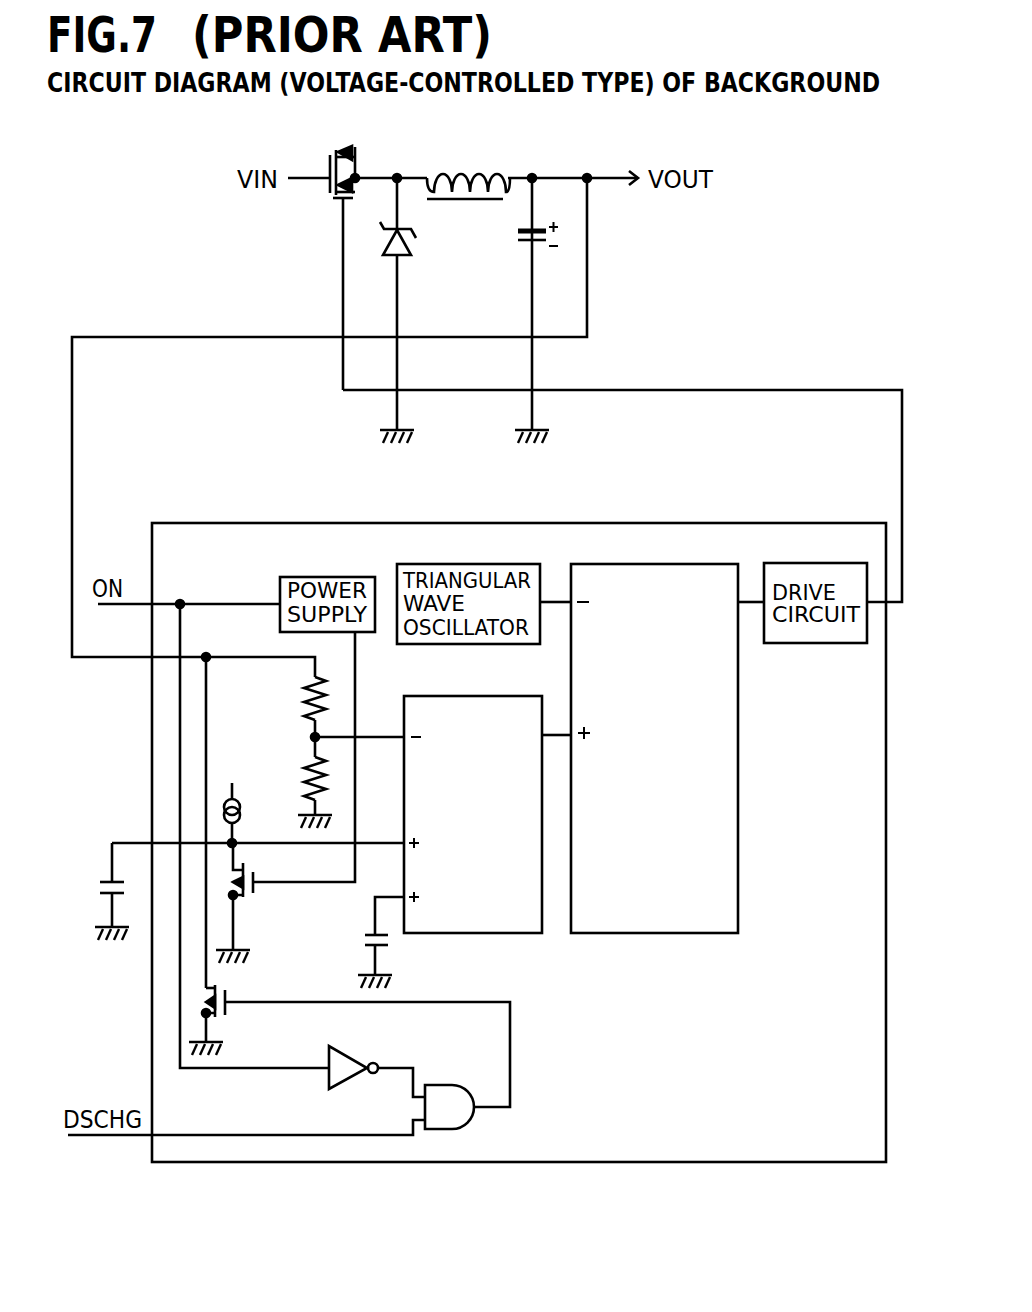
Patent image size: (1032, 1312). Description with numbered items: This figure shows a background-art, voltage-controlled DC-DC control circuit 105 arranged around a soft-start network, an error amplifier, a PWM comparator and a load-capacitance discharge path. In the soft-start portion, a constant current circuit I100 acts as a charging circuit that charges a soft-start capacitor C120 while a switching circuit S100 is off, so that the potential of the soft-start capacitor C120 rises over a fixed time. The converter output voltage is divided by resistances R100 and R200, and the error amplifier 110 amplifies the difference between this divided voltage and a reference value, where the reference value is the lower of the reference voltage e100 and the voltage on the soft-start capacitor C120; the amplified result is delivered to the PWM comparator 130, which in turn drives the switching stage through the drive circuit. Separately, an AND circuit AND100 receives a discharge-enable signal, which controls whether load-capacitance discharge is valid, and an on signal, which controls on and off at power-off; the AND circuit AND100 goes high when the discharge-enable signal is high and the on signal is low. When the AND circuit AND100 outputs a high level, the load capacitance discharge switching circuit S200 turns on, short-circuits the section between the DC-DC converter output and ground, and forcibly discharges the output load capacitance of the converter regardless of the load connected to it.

The DC-DC control circuit 105 is at (230, 523).
The error amplifier 110 is at (463, 696).
The PWM comparator 130 is at (736, 855).
The resistance R100 is at (287, 698).
The resistance R200 is at (287, 778).
The constant current circuit I100 is at (256, 813).
The soft-start capacitor C120 is at (90, 891).
The switching circuit S100 is at (260, 903).
The load capacitance discharge switching circuit S200 is at (233, 1020).
The reference voltage e100 is at (357, 942).
The AND circuit AND100 is at (463, 1085).